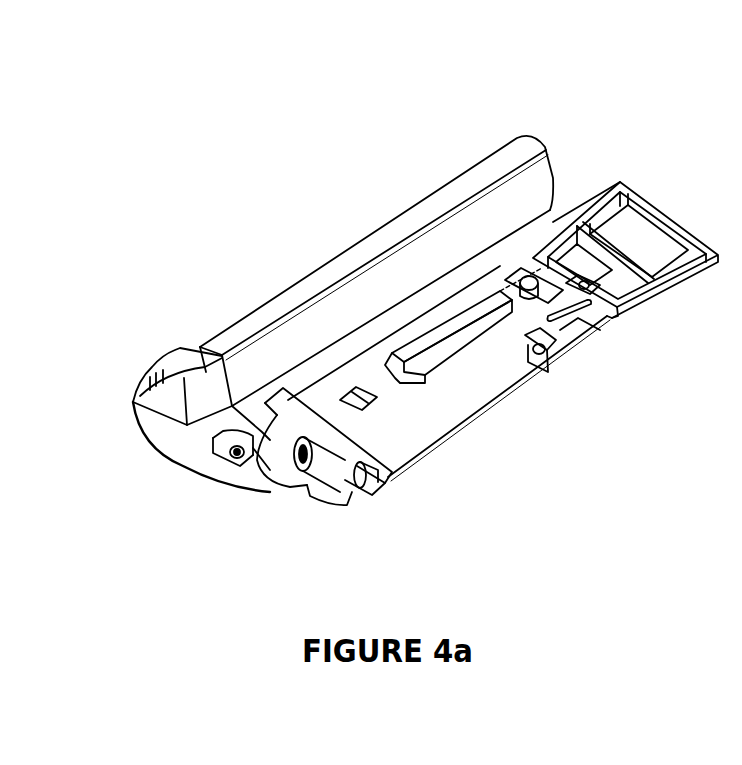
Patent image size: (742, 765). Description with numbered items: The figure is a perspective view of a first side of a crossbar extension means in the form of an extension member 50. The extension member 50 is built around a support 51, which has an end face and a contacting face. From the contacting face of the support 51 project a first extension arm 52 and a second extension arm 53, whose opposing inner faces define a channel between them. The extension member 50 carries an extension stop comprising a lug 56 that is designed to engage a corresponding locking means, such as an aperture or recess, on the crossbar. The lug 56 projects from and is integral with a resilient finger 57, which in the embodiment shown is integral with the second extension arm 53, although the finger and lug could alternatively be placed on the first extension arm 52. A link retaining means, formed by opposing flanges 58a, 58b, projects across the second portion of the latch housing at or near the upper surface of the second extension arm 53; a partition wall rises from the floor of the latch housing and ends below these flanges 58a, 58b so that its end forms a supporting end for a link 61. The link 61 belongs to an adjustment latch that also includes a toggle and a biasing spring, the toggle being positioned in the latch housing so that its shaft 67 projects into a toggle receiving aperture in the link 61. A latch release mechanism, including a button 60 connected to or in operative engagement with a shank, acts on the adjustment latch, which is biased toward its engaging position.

The extension member 50 is at (426, 165).
The support 51 is at (355, 458).
The first extension arm 52 is at (255, 320).
The second extension arm 53 is at (410, 407).
The lug 56 is at (563, 355).
The resilient finger 57 is at (590, 329).
The flange 58a is at (495, 300).
The flange 58b is at (483, 285).
The button 60 is at (367, 500).
The link 61 is at (453, 348).
The shaft 67 is at (582, 325).